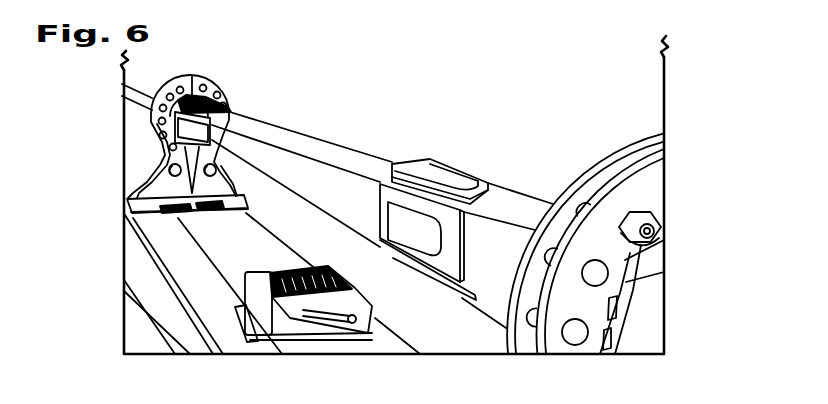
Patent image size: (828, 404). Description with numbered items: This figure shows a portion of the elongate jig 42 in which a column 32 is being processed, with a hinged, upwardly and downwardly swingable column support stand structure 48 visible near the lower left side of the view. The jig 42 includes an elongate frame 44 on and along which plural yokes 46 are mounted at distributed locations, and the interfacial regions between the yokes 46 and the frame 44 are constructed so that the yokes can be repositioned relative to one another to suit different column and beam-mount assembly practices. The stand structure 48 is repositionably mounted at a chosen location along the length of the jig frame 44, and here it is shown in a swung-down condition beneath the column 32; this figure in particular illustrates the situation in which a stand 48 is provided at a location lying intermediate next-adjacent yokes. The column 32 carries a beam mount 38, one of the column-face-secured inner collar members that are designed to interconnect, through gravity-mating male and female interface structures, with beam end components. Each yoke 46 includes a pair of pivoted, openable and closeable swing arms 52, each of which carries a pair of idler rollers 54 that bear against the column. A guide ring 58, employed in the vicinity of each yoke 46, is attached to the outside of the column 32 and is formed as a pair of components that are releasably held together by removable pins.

The column 32 is at (642, 288).
The beam mount 38 is at (383, 220).
The jig 42 is at (133, 150).
The frame 44 is at (166, 278).
The yoke 46 is at (196, 76).
The stand structure 48 is at (297, 301).
The swing arm 52 is at (553, 338).
The idler roller 54 is at (595, 203).
The guide ring 58 is at (615, 322).